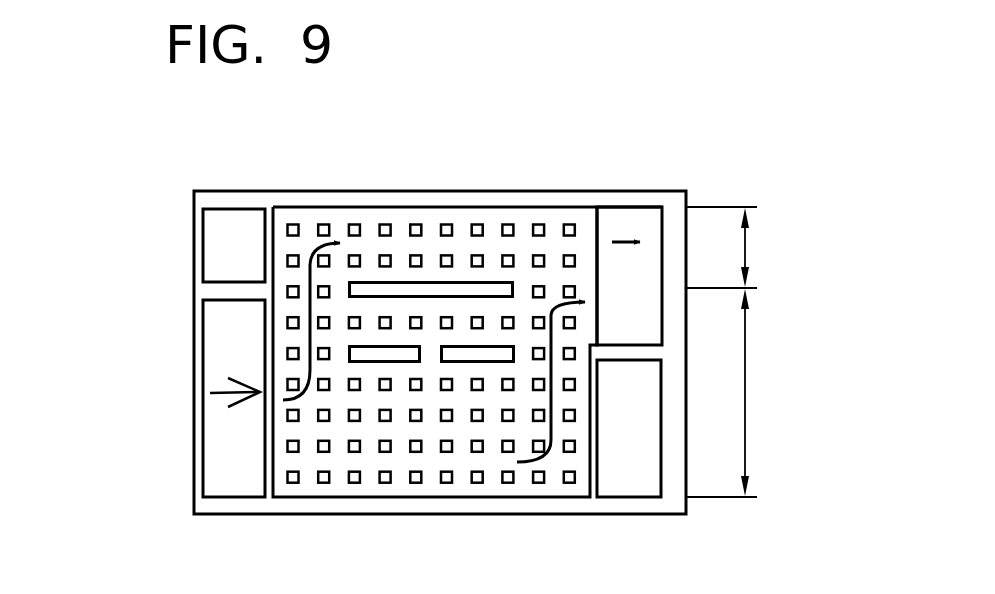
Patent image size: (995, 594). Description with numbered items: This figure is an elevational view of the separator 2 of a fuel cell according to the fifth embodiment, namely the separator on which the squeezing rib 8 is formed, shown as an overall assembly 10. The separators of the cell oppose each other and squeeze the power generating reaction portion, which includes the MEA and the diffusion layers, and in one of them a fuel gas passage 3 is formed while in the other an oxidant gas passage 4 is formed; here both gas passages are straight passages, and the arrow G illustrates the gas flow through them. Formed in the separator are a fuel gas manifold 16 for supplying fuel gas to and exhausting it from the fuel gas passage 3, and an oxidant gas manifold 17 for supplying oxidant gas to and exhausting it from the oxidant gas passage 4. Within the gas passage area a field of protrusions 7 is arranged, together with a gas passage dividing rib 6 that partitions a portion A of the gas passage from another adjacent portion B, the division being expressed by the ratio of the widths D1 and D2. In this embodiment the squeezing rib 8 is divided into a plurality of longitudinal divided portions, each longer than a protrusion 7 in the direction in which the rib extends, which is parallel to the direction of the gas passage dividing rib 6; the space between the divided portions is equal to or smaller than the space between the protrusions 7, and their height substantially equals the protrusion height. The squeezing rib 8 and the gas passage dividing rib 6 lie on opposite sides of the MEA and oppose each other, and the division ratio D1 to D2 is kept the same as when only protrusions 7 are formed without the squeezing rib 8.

The semiconductor device / substrate 10 is at (700, 184).
The separator 2 is at (430, 190).
The fuel gas passage 3 is at (500, 512).
The oxidant gas passage 4 is at (456, 463).
The gas passage dividing rib 6 is at (478, 282).
The protrusion 7 is at (413, 258).
The squeezing rib 8 is at (458, 364).
The fuel gas manifold 16 is at (235, 257).
The oxidant gas manifold 17 is at (617, 223).
The gas flow G is at (305, 255).
The portion of the gas passage A is at (435, 462).
The another portion of the gas passage B is at (372, 247).
The gas passage division dimension D1 is at (745, 390).
The gas passage division dimension D2 is at (745, 256).